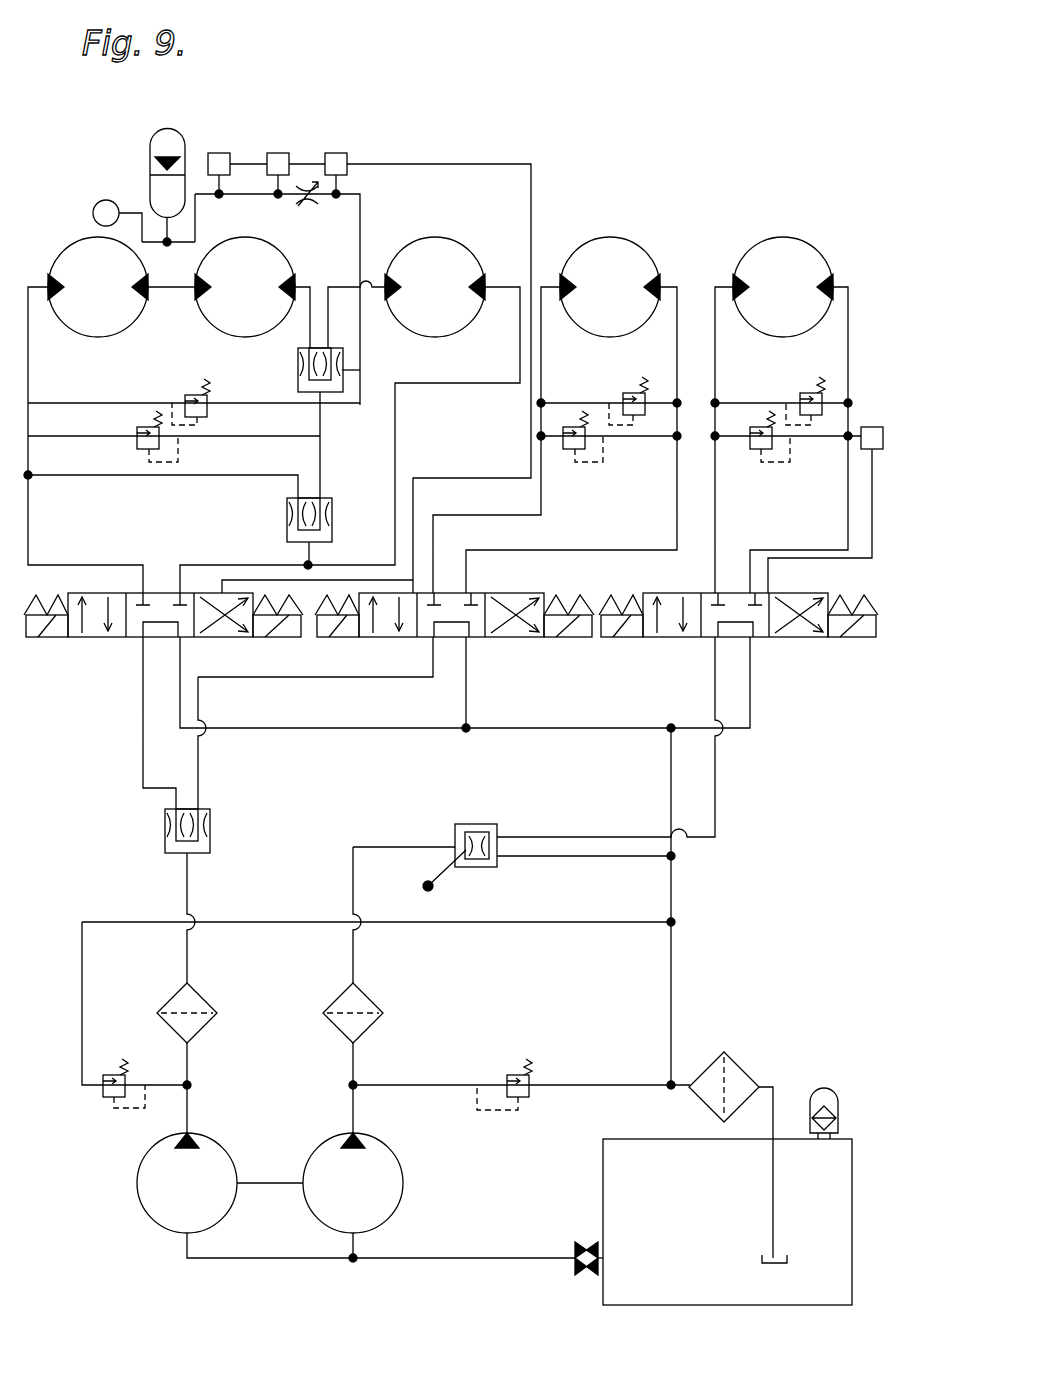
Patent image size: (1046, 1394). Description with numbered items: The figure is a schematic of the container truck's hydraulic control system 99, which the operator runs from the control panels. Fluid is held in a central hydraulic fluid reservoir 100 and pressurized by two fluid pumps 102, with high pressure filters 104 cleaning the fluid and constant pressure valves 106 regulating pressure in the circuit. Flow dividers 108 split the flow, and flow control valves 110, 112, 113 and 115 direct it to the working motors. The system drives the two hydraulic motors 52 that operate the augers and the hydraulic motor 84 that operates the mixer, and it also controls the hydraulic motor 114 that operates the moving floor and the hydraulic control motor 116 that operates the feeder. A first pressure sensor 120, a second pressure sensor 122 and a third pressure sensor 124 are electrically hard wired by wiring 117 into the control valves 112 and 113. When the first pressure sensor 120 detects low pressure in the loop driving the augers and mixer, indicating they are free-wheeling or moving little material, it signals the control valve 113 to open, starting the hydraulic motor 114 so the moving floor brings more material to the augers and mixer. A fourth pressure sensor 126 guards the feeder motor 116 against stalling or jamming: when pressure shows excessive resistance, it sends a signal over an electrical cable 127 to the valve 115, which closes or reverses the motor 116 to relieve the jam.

The hydraulic motors 52 is at (85, 342).
The hydraulic motor 84 is at (480, 240).
The hydraulic control system 99 is at (745, 878).
The central hydraulic fluid reservoir 100 is at (603, 1180).
The fluid pumps 102 is at (137, 1178).
The high pressure filters 104 is at (205, 998).
The constant pressure valves 106 is at (207, 397).
The flow dividers 108 is at (342, 375).
The flow control valve 110 is at (470, 824).
The flow control valve 112 is at (120, 648).
The flow control valve 113 is at (405, 648).
The hydraulic motor 114 is at (650, 243).
The flow control valve 115 is at (690, 648).
The hydraulic control motor 116 is at (818, 243).
The wiring 117 is at (531, 225).
The first pressure sensor 120 is at (340, 153).
The second pressure sensor 122 is at (283, 153).
The third pressure sensor 124 is at (222, 153).
The fourth pressure sensor 126 is at (872, 427).
The electrical cable 127 is at (810, 560).